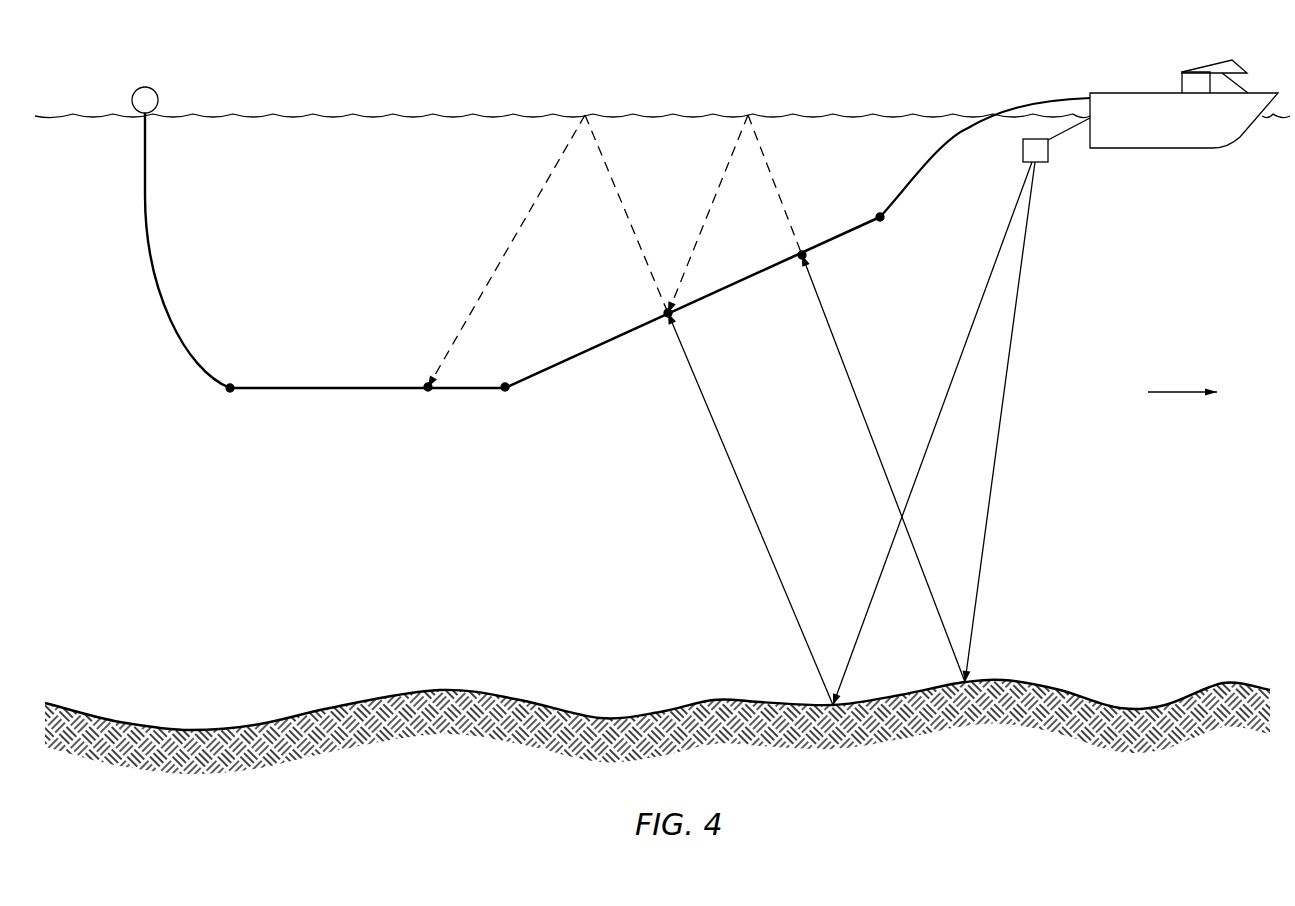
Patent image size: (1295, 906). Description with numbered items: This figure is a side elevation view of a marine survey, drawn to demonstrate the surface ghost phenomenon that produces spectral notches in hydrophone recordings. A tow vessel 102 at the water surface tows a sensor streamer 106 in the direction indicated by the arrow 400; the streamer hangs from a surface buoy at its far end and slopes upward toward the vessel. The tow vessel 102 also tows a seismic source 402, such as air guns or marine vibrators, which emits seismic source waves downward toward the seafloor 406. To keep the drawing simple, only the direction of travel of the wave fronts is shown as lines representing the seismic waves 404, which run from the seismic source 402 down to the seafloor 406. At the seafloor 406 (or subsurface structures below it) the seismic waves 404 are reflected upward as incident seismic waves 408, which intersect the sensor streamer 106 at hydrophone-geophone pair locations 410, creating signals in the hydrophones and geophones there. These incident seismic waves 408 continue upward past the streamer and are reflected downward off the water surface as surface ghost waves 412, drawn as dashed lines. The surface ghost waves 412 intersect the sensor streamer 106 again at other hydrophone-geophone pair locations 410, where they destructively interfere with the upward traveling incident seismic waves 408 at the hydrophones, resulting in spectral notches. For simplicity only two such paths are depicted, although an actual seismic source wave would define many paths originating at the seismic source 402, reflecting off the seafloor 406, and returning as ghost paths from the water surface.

The tow vessel 102 is at (1143, 93).
The sensor streamer 106 is at (837, 237).
The arrow 400 is at (1170, 393).
The seismic source 402 is at (1049, 164).
The seismic waves 404 is at (982, 302).
The seafloor 406 is at (453, 690).
The incident seismic waves 408 is at (703, 400).
The hydrophone-geophone pair locations 410 is at (428, 392).
The surface ghost waves 412 is at (507, 254).